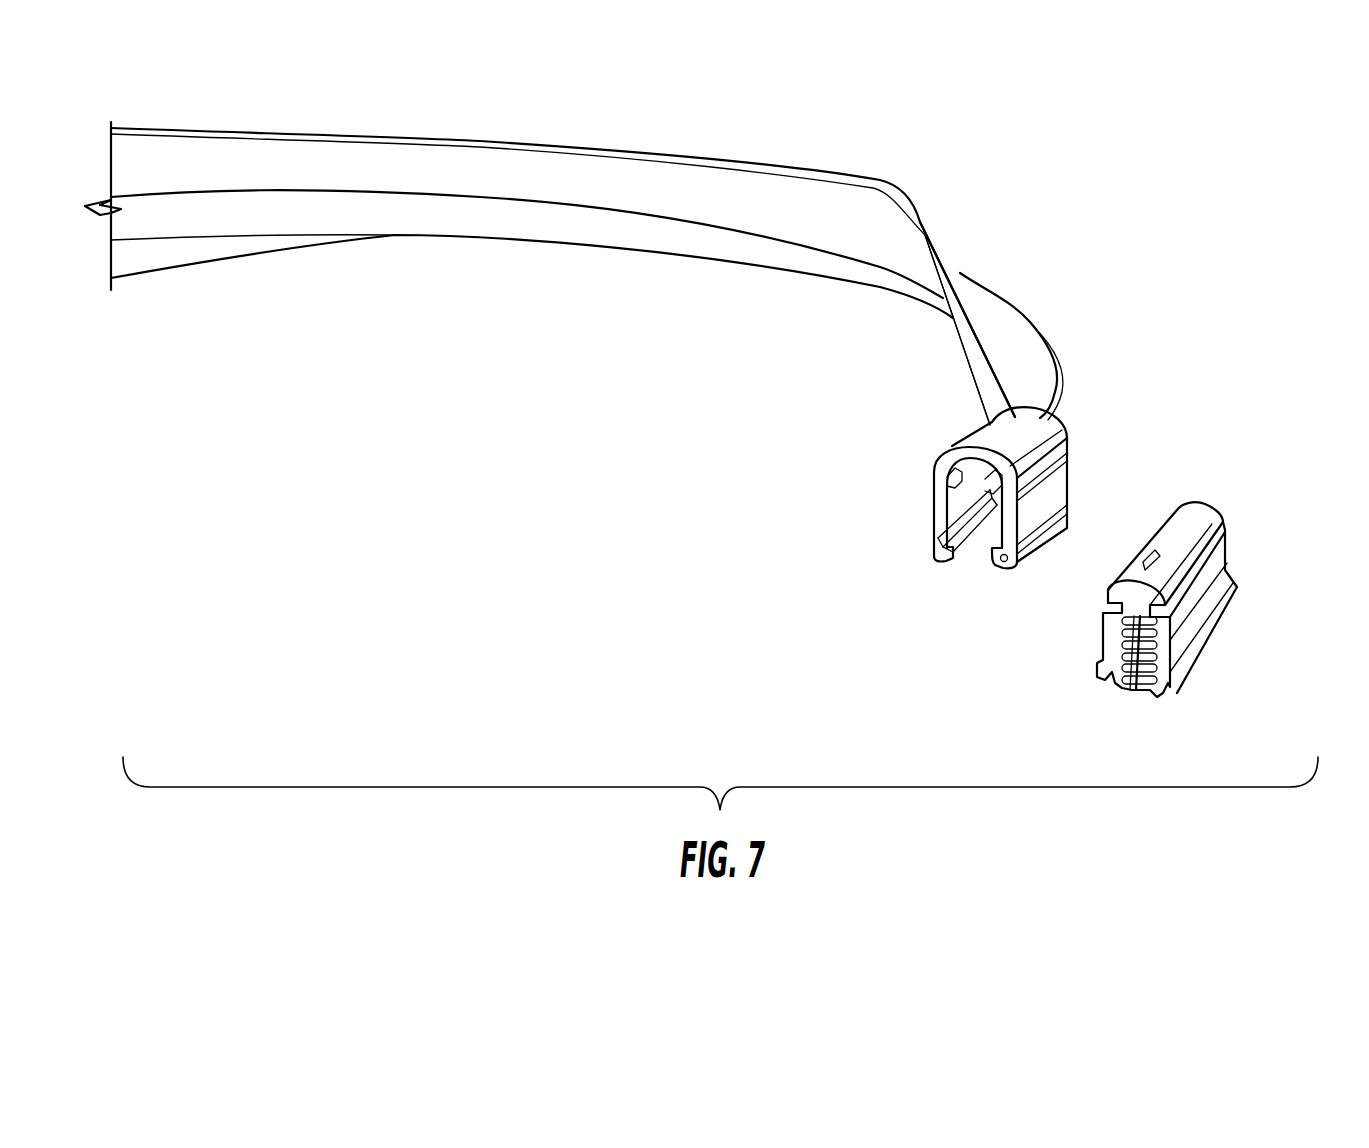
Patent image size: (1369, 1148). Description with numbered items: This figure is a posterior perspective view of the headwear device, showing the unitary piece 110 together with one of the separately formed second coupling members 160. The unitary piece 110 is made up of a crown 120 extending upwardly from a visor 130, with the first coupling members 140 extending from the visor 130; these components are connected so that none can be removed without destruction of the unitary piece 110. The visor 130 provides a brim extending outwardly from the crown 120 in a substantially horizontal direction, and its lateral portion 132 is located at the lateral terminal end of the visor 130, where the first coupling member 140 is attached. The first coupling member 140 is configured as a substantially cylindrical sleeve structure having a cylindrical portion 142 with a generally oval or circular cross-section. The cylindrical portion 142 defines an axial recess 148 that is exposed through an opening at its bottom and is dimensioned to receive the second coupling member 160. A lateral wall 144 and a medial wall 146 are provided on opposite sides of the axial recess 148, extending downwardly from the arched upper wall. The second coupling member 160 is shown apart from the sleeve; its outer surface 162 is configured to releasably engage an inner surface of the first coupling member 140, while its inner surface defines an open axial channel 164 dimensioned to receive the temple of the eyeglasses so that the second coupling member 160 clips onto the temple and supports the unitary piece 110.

The unitary piece 110 is at (962, 228).
The crown 120 is at (836, 195).
The visor 130 is at (1025, 330).
The lateral portion 132 is at (992, 397).
The first coupling member 140 is at (992, 503).
The cylindrical portion 142 is at (1057, 440).
The lateral wall 144 is at (1050, 488).
The medial wall 146 is at (935, 537).
The axial recess 148 is at (975, 565).
The second coupling member 160 is at (1183, 625).
The outer surface 162 is at (1223, 543).
The axial channel 164 is at (1138, 703).